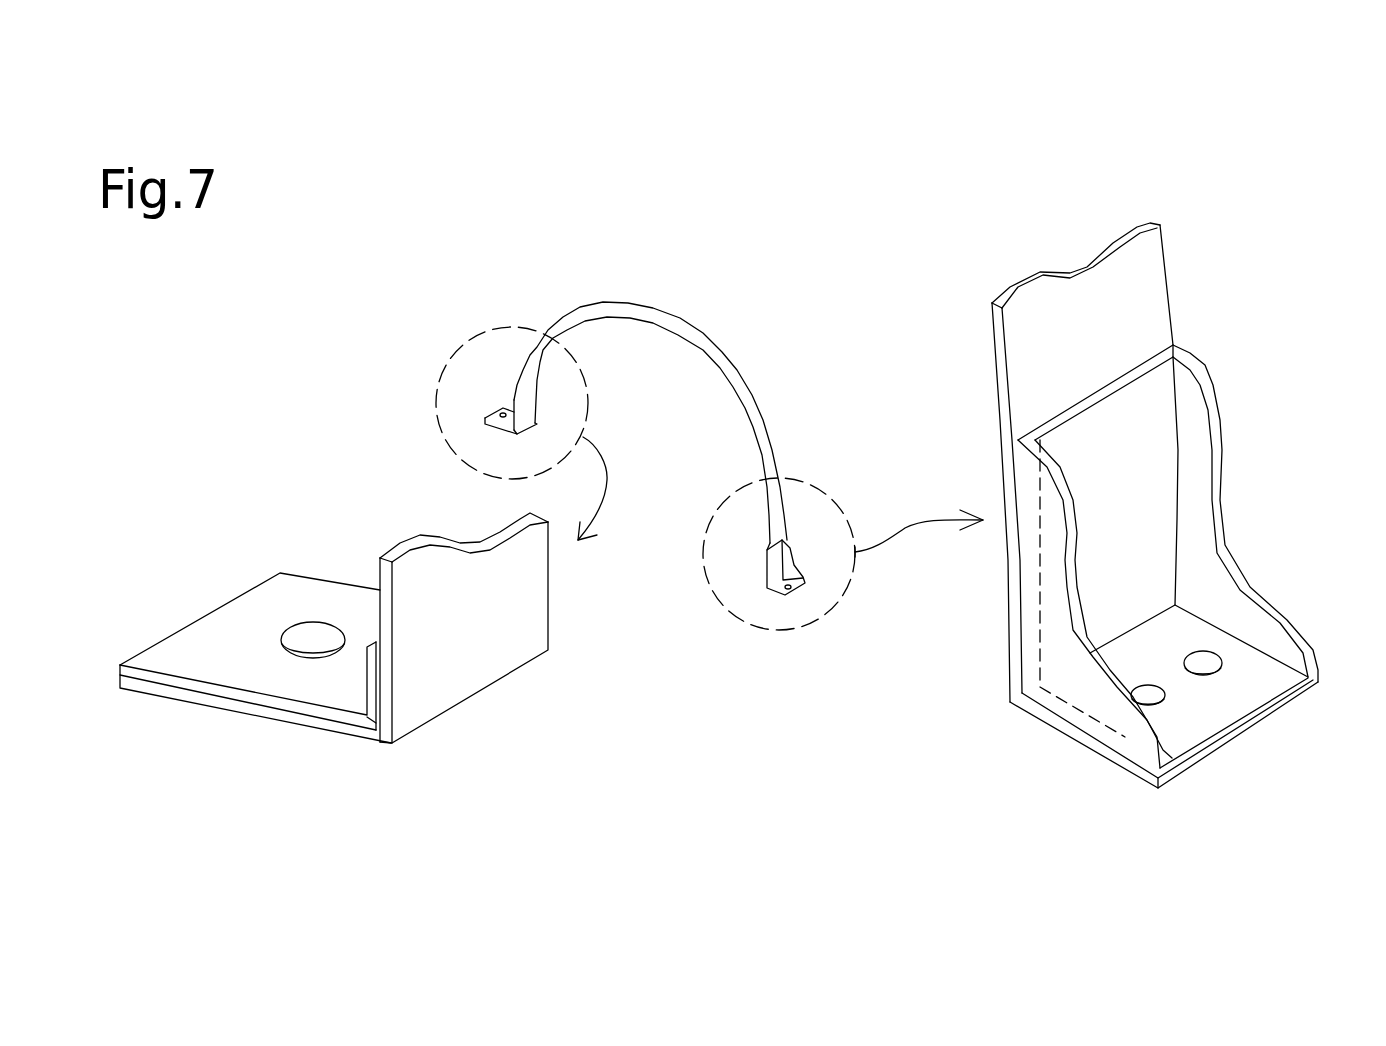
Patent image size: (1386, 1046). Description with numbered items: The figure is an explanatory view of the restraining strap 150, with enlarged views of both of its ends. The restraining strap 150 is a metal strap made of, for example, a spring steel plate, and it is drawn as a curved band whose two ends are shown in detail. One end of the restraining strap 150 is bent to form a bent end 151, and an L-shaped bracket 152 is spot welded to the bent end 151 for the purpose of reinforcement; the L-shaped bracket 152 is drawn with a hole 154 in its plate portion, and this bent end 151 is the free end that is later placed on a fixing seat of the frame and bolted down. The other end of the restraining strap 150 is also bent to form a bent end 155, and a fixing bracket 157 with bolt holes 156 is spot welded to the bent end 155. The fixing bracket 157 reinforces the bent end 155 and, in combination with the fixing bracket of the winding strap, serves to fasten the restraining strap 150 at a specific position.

The restraining strap 150 is at (690, 348).
The bent end 151 is at (334, 655).
The L-shaped bracket 152 is at (252, 622).
The hole 154 is at (317, 642).
The bent end 155 is at (1183, 543).
The bolt holes 156 is at (1157, 705).
The fixing bracket 157 is at (1203, 510).